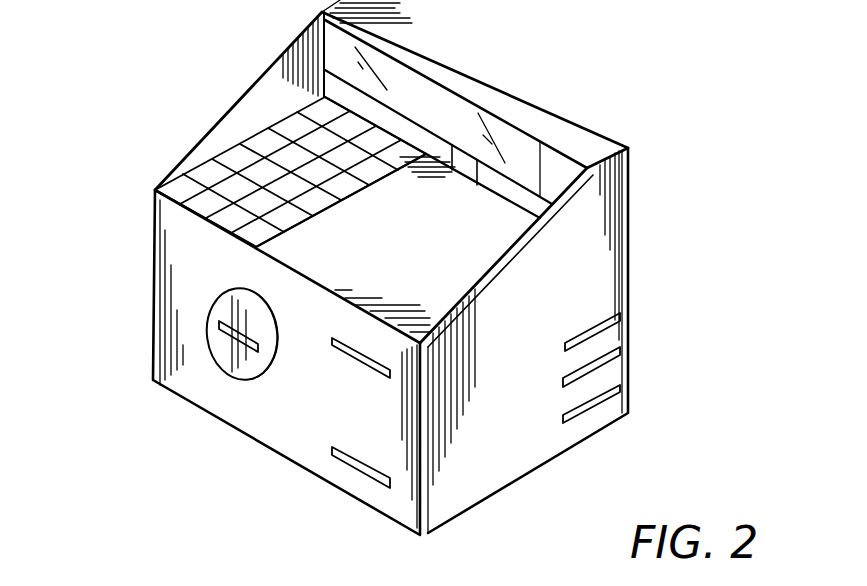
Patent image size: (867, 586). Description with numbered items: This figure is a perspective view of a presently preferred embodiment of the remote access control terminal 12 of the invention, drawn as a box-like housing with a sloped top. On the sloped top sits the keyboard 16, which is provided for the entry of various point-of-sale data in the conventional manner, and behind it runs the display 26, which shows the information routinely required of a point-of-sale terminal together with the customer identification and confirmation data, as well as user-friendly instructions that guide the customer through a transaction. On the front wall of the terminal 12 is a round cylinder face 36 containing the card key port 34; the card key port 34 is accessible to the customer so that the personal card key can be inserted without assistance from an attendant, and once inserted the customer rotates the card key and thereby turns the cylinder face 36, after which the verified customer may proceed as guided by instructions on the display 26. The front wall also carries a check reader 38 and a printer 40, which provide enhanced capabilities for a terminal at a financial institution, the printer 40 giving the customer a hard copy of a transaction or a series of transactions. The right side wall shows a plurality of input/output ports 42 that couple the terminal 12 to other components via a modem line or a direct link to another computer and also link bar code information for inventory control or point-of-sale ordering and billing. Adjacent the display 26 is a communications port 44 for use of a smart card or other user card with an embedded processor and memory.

The remote access control terminal 12 is at (633, 210).
The keyboard 16 is at (235, 163).
The display 26 is at (497, 133).
The card key port 34 is at (240, 338).
The cylinder face 36 is at (222, 305).
The check reader 38 is at (367, 360).
The printer 40 is at (360, 473).
The input/output ports 42 is at (620, 390).
The communications port 44 is at (463, 165).